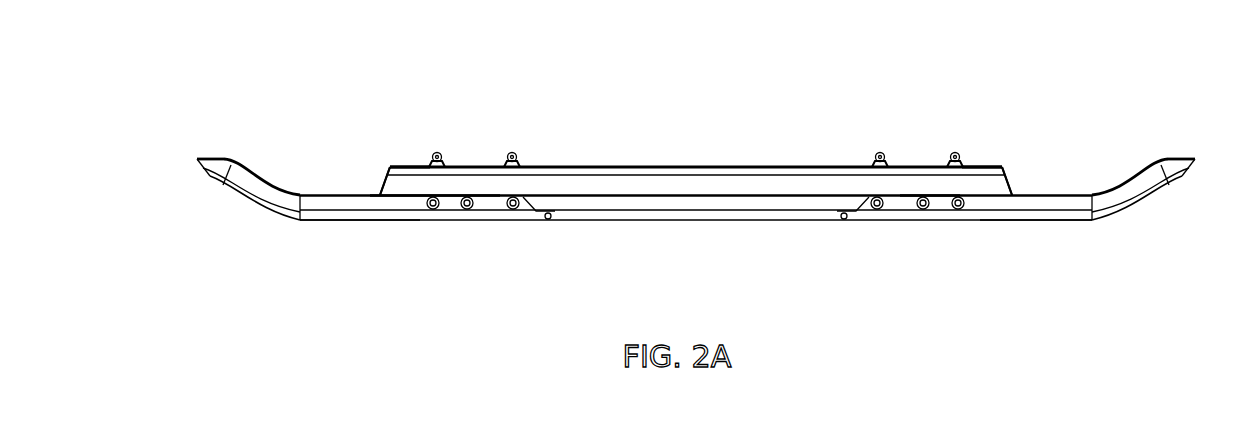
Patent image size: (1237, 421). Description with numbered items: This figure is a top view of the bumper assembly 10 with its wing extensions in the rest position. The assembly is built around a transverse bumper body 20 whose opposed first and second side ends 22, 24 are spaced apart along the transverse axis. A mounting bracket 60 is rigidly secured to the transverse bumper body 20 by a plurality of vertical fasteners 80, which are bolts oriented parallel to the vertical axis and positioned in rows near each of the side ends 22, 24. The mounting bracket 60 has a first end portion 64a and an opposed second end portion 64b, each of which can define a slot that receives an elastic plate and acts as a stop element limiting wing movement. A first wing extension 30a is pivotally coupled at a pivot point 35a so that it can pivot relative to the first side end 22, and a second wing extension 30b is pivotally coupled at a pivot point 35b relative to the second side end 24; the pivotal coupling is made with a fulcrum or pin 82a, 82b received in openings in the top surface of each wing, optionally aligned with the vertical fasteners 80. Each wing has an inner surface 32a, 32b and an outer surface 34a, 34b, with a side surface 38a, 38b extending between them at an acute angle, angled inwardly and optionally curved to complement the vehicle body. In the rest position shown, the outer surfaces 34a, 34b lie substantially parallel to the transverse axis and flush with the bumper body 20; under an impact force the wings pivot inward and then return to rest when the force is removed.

The bumper assembly 10 is at (224, 54).
The transverse bumper body 20 is at (683, 221).
The first side end 22 is at (926, 204).
The second side end 24 is at (373, 191).
The first wing extension 30a is at (1155, 188).
The second wing extension 30b is at (231, 176).
The inner surface of first wing extension 32a is at (1084, 190).
The inner surface of second wing extension 32b is at (262, 180).
The outer surface of first wing extension 34a is at (1047, 222).
The outer surface of second wing extension 34b is at (348, 224).
The pivot point 35a is at (953, 183).
The pivot point 35b is at (444, 187).
The side surface of first wing extension 38a is at (1179, 177).
The side surface of second wing extension 38b is at (213, 177).
The mounting bracket 60 is at (628, 192).
The first end portion 64a is at (985, 167).
The second end portion 64b is at (411, 167).
The vertical fastener 80 is at (512, 208).
The fulcrum or pin 82a is at (953, 183).
The fulcrum or pin 82b is at (444, 187).